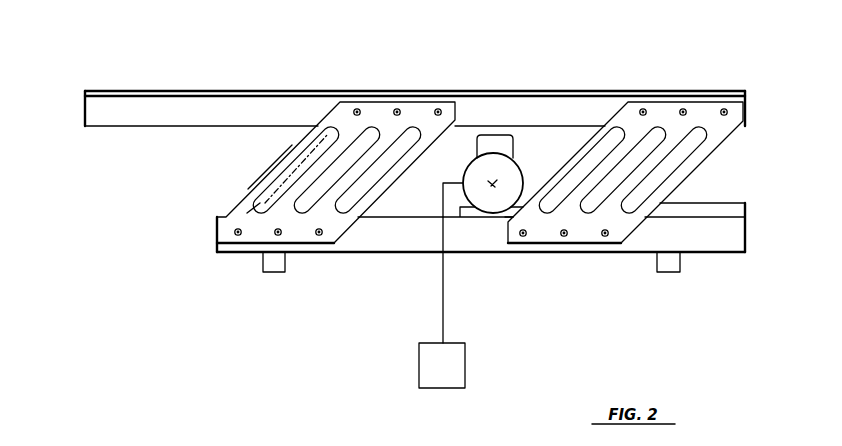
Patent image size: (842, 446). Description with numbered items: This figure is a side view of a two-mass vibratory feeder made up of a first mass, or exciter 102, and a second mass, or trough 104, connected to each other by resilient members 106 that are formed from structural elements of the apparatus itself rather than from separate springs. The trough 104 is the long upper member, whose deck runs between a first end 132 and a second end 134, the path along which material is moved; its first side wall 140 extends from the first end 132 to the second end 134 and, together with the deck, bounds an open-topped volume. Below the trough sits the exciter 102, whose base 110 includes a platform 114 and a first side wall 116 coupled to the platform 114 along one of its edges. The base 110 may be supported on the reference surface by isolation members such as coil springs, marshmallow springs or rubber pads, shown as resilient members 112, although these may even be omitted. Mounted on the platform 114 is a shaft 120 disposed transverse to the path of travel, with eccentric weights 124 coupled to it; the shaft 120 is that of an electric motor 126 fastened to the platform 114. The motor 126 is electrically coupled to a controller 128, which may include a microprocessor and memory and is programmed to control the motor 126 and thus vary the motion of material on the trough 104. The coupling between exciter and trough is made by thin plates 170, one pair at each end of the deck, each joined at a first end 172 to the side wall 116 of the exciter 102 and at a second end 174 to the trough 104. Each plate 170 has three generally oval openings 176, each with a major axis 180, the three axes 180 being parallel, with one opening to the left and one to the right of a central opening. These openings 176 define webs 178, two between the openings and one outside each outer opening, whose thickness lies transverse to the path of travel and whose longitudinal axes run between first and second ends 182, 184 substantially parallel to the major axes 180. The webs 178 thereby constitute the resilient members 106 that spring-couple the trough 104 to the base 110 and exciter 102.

The first mass 102 is at (494, 228).
The second mass 104 is at (548, 86).
The resilient members 106 is at (707, 183).
The base 110 is at (214, 237).
The resilient members 112 is at (277, 271).
The platform 114 is at (428, 215).
The first side wall 116 is at (418, 255).
The shaft 120 is at (497, 184).
The eccentric weights 124 is at (482, 203).
The electric motor 126 is at (513, 148).
The controller 128 is at (420, 366).
The first end 132 is at (734, 86).
The second end 134 is at (112, 82).
The first side wall 140 is at (160, 115).
The plates 170 is at (329, 236).
The first end 172 is at (256, 226).
The second end 174 is at (415, 118).
The opening 176 is at (290, 161).
The webs 178 is at (268, 176).
The major axis 180 is at (348, 121).
The first end 182 is at (247, 203).
The second end 184 is at (323, 131).